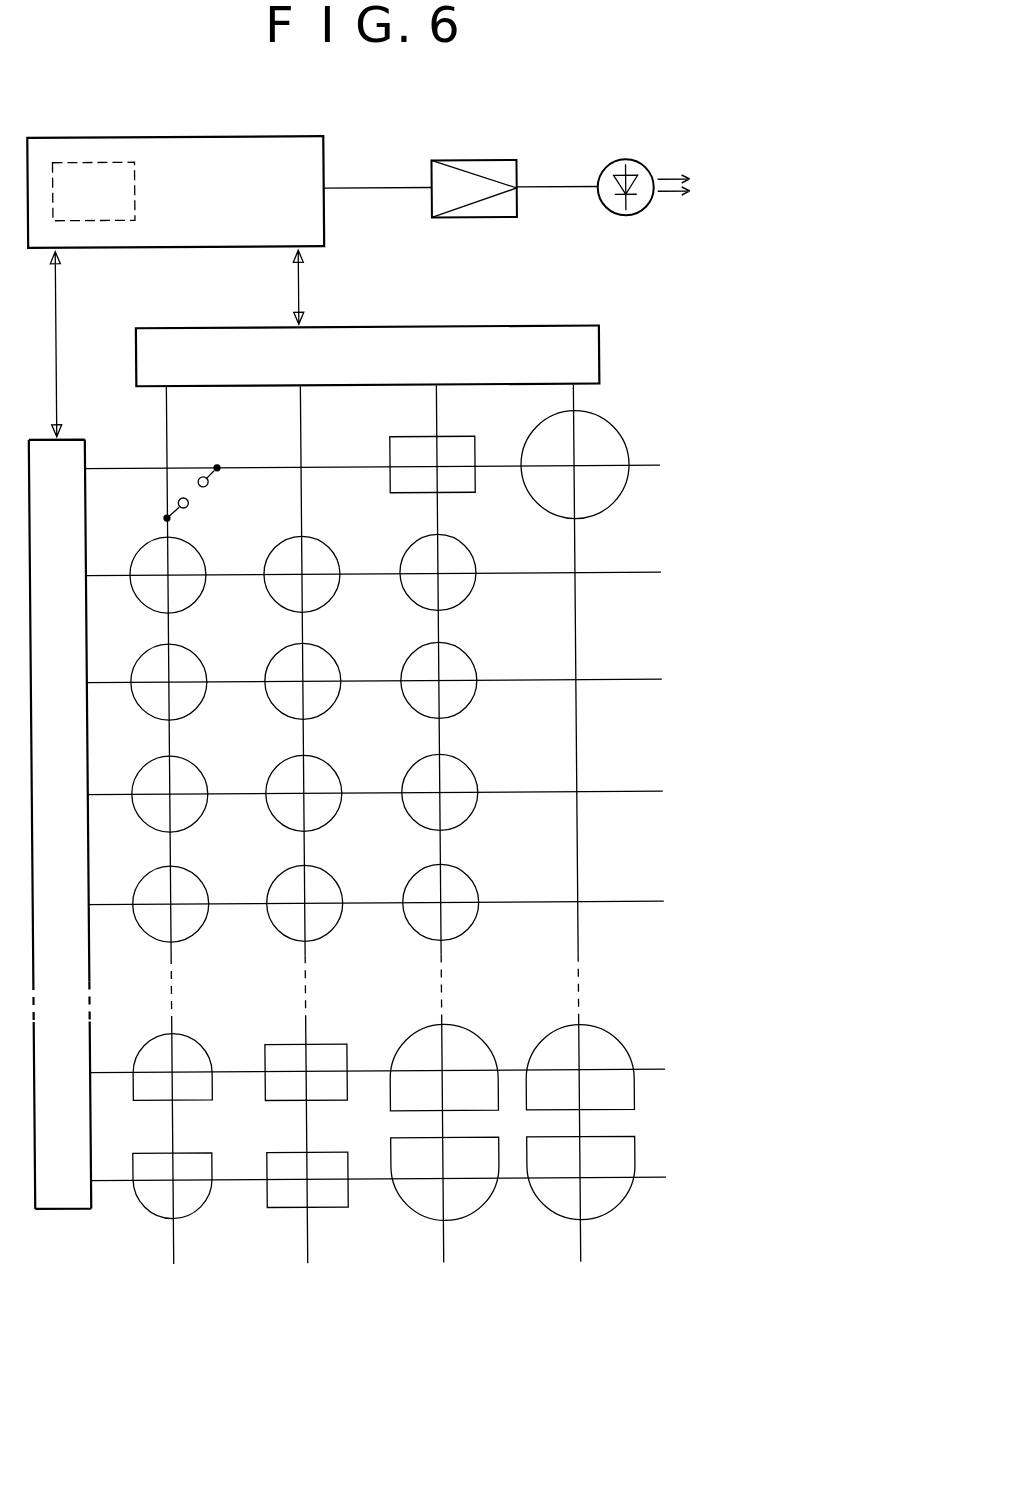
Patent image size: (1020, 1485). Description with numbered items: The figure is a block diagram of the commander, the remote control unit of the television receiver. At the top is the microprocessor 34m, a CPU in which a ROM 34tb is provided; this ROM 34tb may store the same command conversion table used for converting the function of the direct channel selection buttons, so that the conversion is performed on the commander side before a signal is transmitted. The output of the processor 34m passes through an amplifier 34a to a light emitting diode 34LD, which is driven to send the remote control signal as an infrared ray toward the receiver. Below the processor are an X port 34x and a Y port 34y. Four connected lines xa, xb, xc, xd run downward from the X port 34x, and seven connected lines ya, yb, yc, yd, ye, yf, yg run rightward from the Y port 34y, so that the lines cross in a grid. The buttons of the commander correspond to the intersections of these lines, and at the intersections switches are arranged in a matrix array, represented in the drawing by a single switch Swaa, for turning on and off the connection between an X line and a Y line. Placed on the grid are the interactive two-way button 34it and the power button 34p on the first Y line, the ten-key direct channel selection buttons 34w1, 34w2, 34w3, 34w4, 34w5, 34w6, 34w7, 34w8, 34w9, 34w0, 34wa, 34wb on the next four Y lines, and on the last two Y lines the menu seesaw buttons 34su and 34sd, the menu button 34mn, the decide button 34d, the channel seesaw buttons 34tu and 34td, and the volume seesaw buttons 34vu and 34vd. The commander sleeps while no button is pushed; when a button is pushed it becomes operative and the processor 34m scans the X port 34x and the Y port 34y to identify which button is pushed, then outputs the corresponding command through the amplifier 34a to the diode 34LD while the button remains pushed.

The microprocessor 34m is at (328, 238).
The ROM 34tb is at (92, 221).
The amplifier 34a is at (465, 219).
The light emitting diode 34LD is at (630, 218).
The X port 34x is at (602, 348).
The Y port 34y is at (62, 1208).
The switch Swaa is at (190, 502).
The interactive button 34it is at (392, 472).
The power button 34p is at (628, 484).
The channel selection button 34w1 is at (196, 601).
The channel selection button 34w2 is at (330, 601).
The channel selection button 34w3 is at (466, 600).
The channel selection button 34w4 is at (196, 708).
The channel selection button 34w5 is at (330, 708).
The channel selection button 34w6 is at (466, 708).
The channel selection button 34w7 is at (196, 820).
The channel selection button 34w8 is at (330, 820).
The channel selection button 34w9 is at (466, 820).
The channel selection button 34w0 is at (196, 930).
The channel selection button 34wa is at (330, 930).
The channel selection button 34wb is at (466, 930).
The seesaw button 34su is at (200, 1040).
The menu button 34mn is at (336, 1044).
The seesaw button 34tu is at (480, 1038).
The seesaw button 34vu is at (616, 1038).
The seesaw button 34sd is at (200, 1210).
The decide button 34d is at (330, 1207).
The seesaw button 34td is at (482, 1204).
The seesaw button 34vd is at (620, 1204).
The connected line xa is at (169, 1268).
The connected line xb is at (303, 1268).
The connected line xc is at (439, 1268).
The connected line xd is at (576, 1268).
The connected line ya is at (664, 467).
The connected line yb is at (664, 574).
The connected line yc is at (664, 681).
The connected line yd is at (664, 793).
The connected line ye is at (664, 903).
The connected line yf is at (664, 1071).
The connected line yg is at (664, 1179).